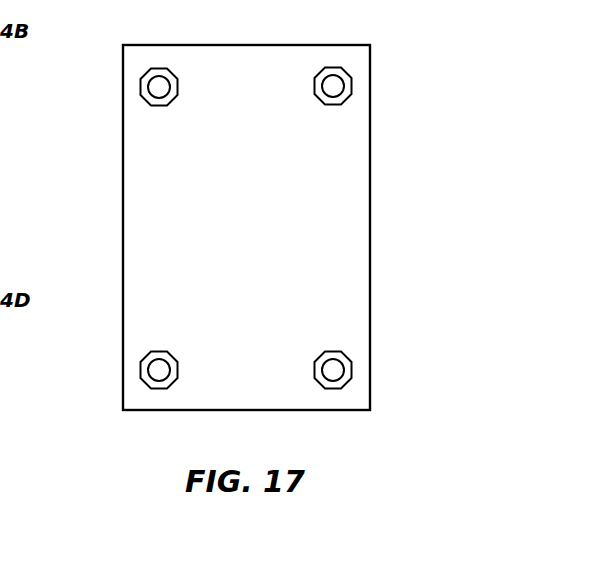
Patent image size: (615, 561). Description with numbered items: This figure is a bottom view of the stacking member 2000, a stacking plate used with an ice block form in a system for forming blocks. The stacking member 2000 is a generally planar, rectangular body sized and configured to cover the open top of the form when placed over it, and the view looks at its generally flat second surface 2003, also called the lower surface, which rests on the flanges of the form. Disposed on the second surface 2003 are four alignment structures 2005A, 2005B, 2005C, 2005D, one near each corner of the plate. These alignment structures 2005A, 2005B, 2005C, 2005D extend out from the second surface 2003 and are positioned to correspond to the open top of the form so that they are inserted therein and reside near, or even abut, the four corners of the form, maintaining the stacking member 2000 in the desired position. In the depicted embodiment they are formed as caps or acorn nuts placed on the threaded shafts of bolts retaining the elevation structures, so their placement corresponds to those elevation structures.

The stacking member 2000 is at (370, 240).
The second surface 2003 is at (176, 190).
The alignment structure 2005A is at (159, 87).
The alignment structure 2005B is at (333, 86).
The alignment structure 2005C is at (159, 370).
The alignment structure 2005D is at (333, 370).